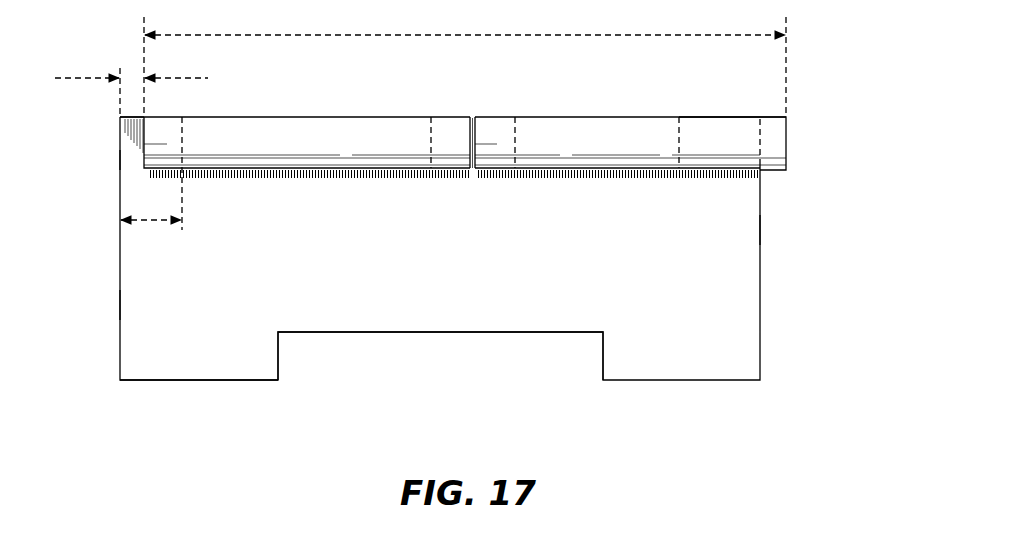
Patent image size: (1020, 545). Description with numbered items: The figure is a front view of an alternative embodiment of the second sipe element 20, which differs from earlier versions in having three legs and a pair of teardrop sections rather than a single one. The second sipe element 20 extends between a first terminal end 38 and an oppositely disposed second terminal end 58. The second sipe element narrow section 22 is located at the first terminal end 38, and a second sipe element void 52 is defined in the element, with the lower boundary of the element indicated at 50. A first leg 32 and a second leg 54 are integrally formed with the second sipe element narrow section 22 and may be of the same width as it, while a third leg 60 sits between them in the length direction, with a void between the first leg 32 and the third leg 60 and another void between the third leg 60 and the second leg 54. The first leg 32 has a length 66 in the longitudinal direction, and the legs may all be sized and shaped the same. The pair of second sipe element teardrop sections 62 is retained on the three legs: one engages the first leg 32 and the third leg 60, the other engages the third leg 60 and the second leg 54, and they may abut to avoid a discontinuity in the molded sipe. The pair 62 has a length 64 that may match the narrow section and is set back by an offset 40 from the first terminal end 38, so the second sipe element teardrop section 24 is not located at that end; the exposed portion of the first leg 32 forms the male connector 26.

The second sipe element 20 is at (862, 143).
The second sipe element narrow section 22 is at (735, 272).
The second sipe element teardrop section 24 is at (233, 126).
The male connector 26 is at (125, 135).
The first leg 32 is at (126, 159).
The first terminal end 38 is at (112, 305).
The offset 40 is at (83, 78).
The bottom surface 50 is at (219, 367).
The second sipe element void 52 is at (426, 371).
The second leg 54 is at (730, 125).
The second terminal end 58 is at (762, 230).
The third leg 60 is at (495, 125).
The pair of second sipe element teardrop sections 62 is at (378, 125).
The length 64 is at (305, 35).
The length 66 is at (148, 222).